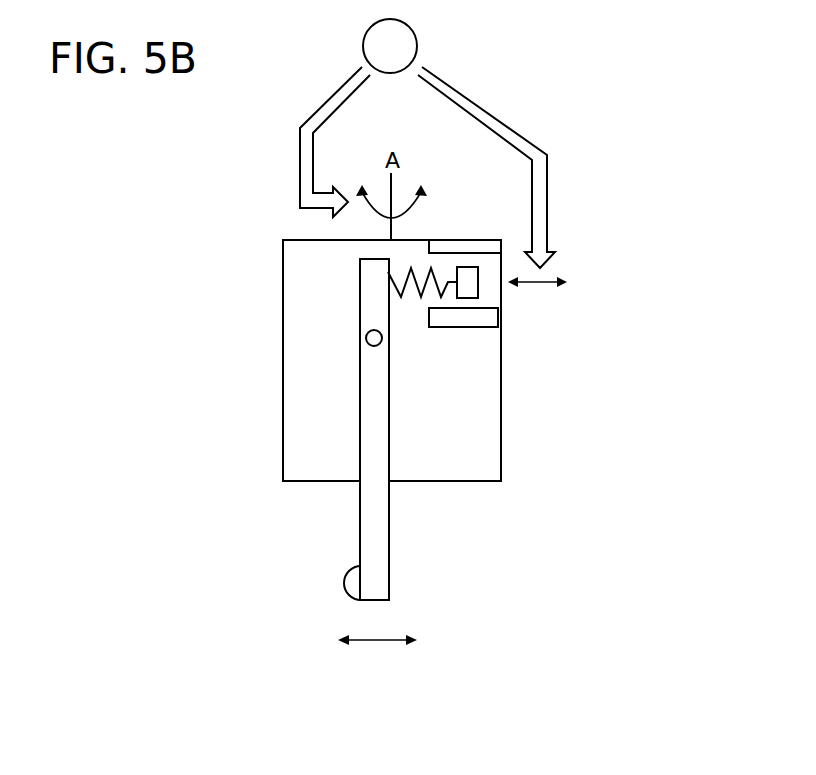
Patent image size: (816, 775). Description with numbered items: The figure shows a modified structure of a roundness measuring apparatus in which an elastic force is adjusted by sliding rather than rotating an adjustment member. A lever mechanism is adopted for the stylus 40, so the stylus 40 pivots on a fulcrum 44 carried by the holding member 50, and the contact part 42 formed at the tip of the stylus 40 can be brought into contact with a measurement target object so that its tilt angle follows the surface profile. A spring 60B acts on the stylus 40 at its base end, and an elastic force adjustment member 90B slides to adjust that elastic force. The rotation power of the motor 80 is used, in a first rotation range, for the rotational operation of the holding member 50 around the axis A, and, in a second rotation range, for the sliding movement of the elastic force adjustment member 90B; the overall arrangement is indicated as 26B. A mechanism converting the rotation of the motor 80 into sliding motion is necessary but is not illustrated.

The drive mechanism 26B is at (569, 144).
The motor 80 is at (407, 49).
The holding member 50 is at (493, 465).
The stylus 40 is at (380, 545).
The contact part 42 is at (343, 580).
The fulcrum 44 is at (367, 337).
The spring 60B is at (417, 292).
The elastic force adjustment member 90B is at (468, 282).